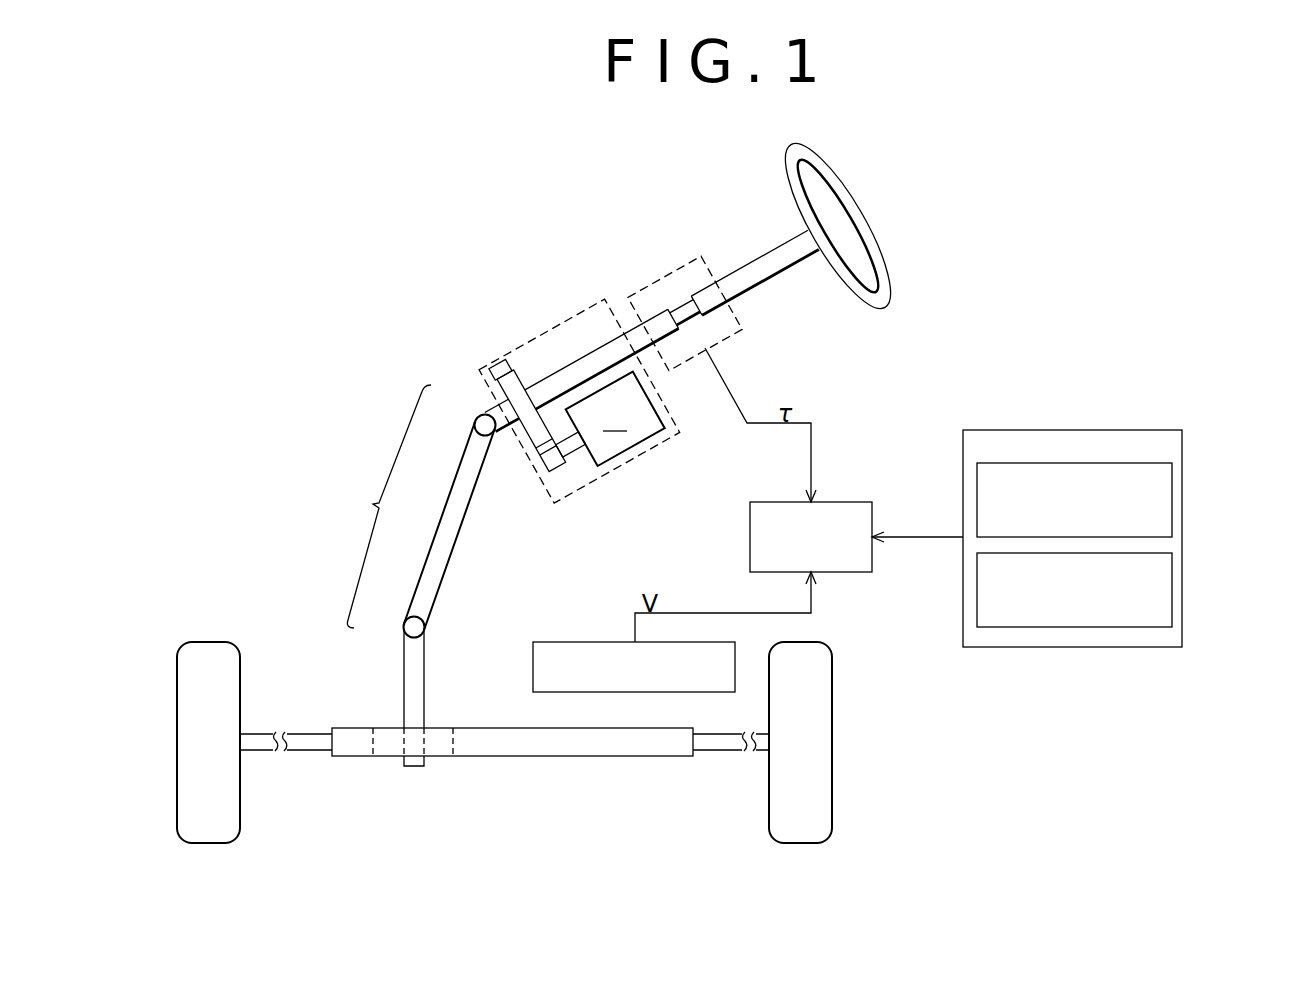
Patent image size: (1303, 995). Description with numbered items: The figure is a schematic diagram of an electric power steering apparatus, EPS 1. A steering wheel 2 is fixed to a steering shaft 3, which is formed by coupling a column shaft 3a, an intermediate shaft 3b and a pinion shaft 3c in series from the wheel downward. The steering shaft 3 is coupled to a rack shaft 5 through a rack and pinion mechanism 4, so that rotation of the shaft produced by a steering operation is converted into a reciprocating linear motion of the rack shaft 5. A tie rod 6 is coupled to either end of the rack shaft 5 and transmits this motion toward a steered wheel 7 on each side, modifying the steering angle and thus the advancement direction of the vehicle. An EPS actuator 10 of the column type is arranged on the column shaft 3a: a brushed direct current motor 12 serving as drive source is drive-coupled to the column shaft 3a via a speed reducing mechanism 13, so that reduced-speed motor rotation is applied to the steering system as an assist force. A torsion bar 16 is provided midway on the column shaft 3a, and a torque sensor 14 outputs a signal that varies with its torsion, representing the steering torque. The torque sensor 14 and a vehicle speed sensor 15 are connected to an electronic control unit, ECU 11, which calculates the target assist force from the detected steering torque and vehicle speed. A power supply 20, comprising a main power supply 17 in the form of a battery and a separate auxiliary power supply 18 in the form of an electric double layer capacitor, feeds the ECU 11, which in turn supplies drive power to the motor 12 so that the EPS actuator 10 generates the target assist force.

The electric power steering apparatus (EPS) 1 is at (1050, 284).
The steering wheel 2 is at (829, 160).
The steering shaft 3 is at (389, 506).
The column shaft 3a is at (475, 420).
The intermediate shaft 3b is at (440, 512).
The pinion shaft 3c is at (403, 652).
The rack and pinion mechanism 4 is at (442, 733).
The rack shaft 5 is at (500, 728).
The tie rod 6 is at (305, 751).
The steered wheel 7 is at (210, 844).
The EPS actuator 10 is at (547, 332).
The electronic control unit (ECU) 11 is at (840, 502).
The motor 12 is at (690, 537).
The speed reducing mechanism 13 is at (549, 473).
The torque sensor 14 is at (740, 331).
The vehicle speed sensor 15 is at (574, 643).
The torsion bar 16 is at (676, 299).
The main power supply 17 is at (1172, 498).
The auxiliary power supply 18 is at (1172, 587).
The power supply 20 is at (1117, 430).